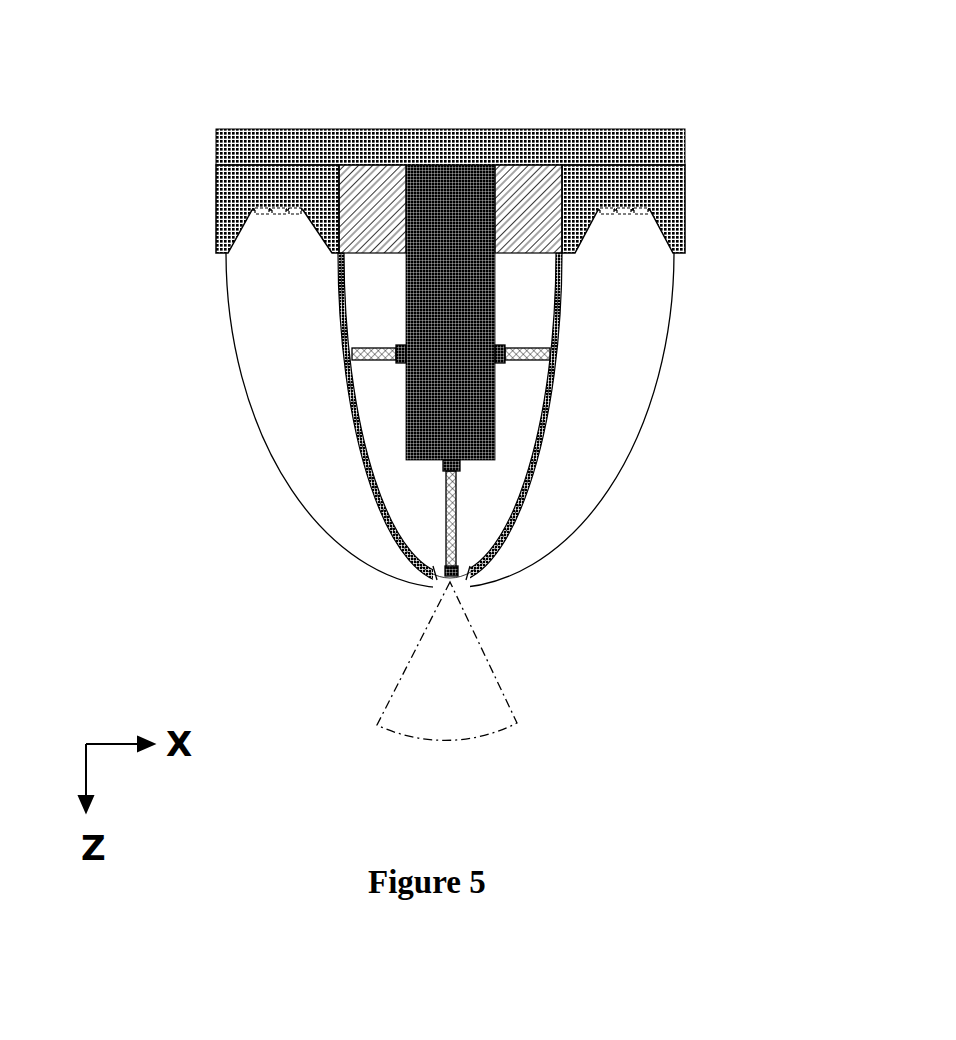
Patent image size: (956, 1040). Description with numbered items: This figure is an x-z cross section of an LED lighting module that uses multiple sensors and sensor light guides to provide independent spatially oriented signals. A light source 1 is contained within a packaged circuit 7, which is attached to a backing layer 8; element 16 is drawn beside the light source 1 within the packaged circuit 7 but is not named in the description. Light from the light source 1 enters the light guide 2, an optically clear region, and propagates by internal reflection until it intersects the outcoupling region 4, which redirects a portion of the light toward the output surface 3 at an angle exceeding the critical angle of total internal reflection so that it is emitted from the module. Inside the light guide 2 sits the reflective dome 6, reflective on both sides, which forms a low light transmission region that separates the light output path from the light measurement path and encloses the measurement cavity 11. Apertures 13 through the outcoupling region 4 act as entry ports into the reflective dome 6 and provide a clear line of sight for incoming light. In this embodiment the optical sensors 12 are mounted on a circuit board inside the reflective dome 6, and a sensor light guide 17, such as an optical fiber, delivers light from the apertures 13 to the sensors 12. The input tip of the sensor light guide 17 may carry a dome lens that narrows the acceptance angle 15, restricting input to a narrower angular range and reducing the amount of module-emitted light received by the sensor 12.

The light source 1 is at (277, 210).
The light guide 2 is at (633, 338).
The output surface 3 is at (552, 555).
The outcoupling region 4 is at (543, 517).
The reflective dome 6 is at (340, 320).
The packaged circuit 7 is at (653, 187).
The backing layer 8 is at (290, 150).
The measurement cavity 11 is at (550, 425).
The optical sensor 12 is at (497, 358).
The apertures 13 is at (350, 353).
The acceptance angle 15 is at (520, 727).
The damping elements 16 is at (468, 255).
The sensor light guide 17 is at (448, 510).